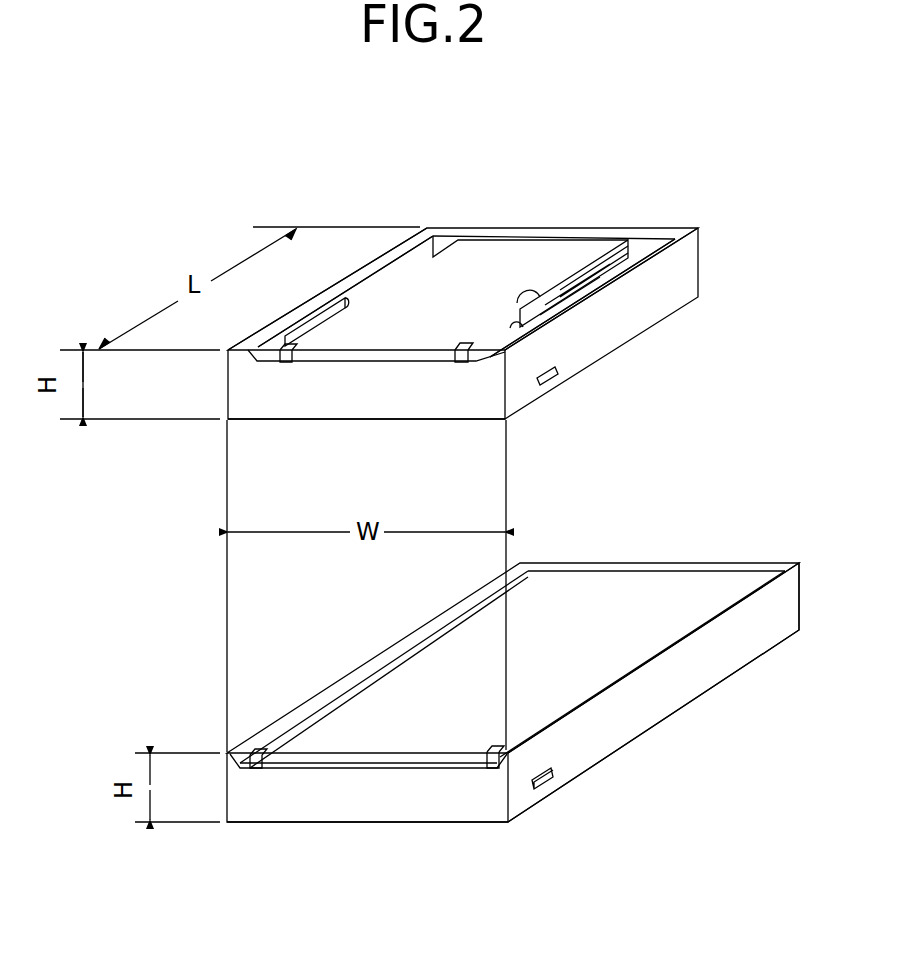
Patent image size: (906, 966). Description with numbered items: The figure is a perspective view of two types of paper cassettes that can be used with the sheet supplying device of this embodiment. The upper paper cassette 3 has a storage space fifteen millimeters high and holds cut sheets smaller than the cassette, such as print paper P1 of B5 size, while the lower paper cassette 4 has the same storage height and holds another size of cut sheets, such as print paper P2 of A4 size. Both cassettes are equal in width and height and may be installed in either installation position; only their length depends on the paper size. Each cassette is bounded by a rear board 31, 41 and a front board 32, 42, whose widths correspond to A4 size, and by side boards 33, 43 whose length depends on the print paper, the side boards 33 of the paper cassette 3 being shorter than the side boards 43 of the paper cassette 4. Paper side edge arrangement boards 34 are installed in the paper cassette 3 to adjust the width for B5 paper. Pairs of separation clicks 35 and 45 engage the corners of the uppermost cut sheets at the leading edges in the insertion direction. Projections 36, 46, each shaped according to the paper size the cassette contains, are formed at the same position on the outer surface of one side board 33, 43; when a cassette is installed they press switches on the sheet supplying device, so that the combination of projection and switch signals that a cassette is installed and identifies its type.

The paper cassette 3 is at (544, 226).
The rear board 31 is at (645, 228).
The front board 32 is at (468, 420).
The side boards 33 is at (288, 313).
The paper side edge arrangement boards 34 is at (330, 300).
The separation clicks 35 is at (288, 362).
The projection 36 is at (560, 369).
The print paper P1 is at (478, 258).
The paper cassette 4 is at (648, 558).
The rear board 41 is at (760, 564).
The front board 42 is at (420, 812).
The side boards 43 is at (730, 670).
The separation clicks 45 is at (255, 770).
The projection 46 is at (557, 772).
The print paper P2 is at (556, 597).